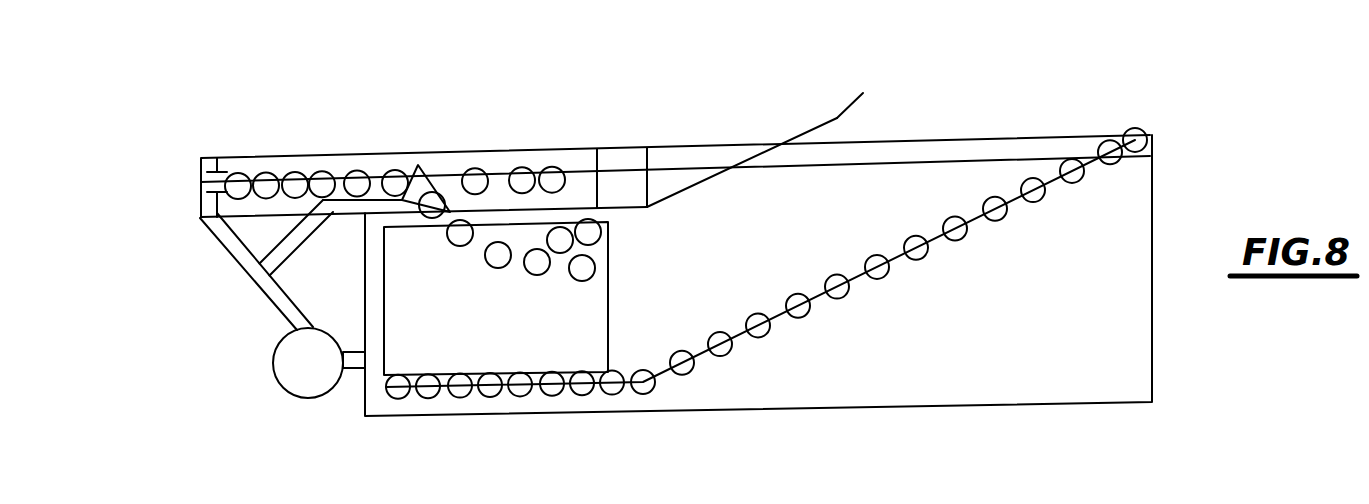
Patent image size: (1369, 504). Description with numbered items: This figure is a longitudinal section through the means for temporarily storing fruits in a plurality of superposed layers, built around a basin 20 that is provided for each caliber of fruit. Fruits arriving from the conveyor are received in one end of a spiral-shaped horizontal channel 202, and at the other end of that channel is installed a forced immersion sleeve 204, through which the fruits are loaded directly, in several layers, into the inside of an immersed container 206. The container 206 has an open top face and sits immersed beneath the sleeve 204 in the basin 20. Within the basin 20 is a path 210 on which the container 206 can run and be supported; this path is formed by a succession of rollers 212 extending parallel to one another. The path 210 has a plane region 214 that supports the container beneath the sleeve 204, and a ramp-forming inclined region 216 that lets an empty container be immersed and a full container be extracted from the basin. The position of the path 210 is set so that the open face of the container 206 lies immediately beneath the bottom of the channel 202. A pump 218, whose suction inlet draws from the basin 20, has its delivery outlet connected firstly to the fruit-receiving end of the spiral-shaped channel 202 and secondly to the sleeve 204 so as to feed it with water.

The basin 20 is at (750, 385).
The spiral-shaped horizontal channel 202 is at (324, 134).
The forced immersion sleeve 204 is at (442, 170).
The container 206 is at (613, 307).
The path 210 is at (830, 304).
The rollers 212 is at (836, 275).
The plane region 214 is at (595, 397).
The inclined region 216 is at (1000, 252).
The pump 218 is at (302, 372).